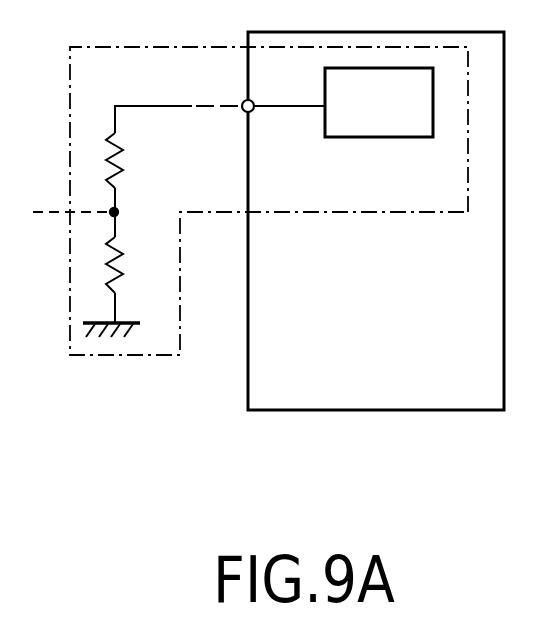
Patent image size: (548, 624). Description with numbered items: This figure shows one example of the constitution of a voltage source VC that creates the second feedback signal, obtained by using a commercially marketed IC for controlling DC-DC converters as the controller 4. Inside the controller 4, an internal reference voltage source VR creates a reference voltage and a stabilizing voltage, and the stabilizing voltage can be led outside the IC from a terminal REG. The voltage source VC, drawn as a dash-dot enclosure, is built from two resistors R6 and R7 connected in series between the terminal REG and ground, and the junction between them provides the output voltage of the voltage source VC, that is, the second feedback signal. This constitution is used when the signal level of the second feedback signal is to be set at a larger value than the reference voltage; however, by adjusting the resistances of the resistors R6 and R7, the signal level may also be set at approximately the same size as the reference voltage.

The controller 4 is at (380, 410).
The voltage source VC is at (138, 355).
The resistor R6 is at (134, 160).
The resistor R7 is at (134, 265).
The terminal REG is at (253, 111).
The internal reference voltage source VR is at (383, 137).